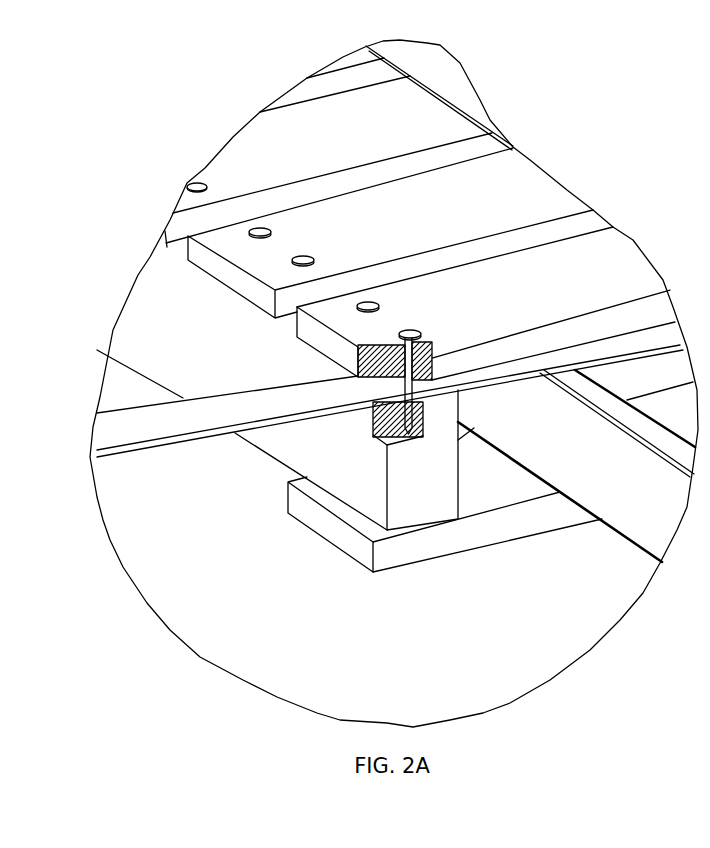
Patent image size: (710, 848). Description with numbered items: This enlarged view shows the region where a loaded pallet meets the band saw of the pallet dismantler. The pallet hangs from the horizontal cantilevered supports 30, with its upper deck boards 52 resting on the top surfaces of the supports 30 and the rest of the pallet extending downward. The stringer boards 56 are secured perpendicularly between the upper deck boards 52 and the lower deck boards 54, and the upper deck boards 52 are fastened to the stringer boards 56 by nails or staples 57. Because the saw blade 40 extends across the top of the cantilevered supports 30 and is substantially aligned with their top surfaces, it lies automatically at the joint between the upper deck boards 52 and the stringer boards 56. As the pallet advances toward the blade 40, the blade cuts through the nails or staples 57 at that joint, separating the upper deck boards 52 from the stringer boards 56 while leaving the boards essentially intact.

The cantilevered supports 30 is at (630, 517).
The saw blade 40 is at (173, 444).
The upper deck boards 52 is at (519, 296).
The lower deck boards 54 is at (503, 526).
The stringer boards 56 is at (276, 442).
The nails or staples 57 is at (420, 331).